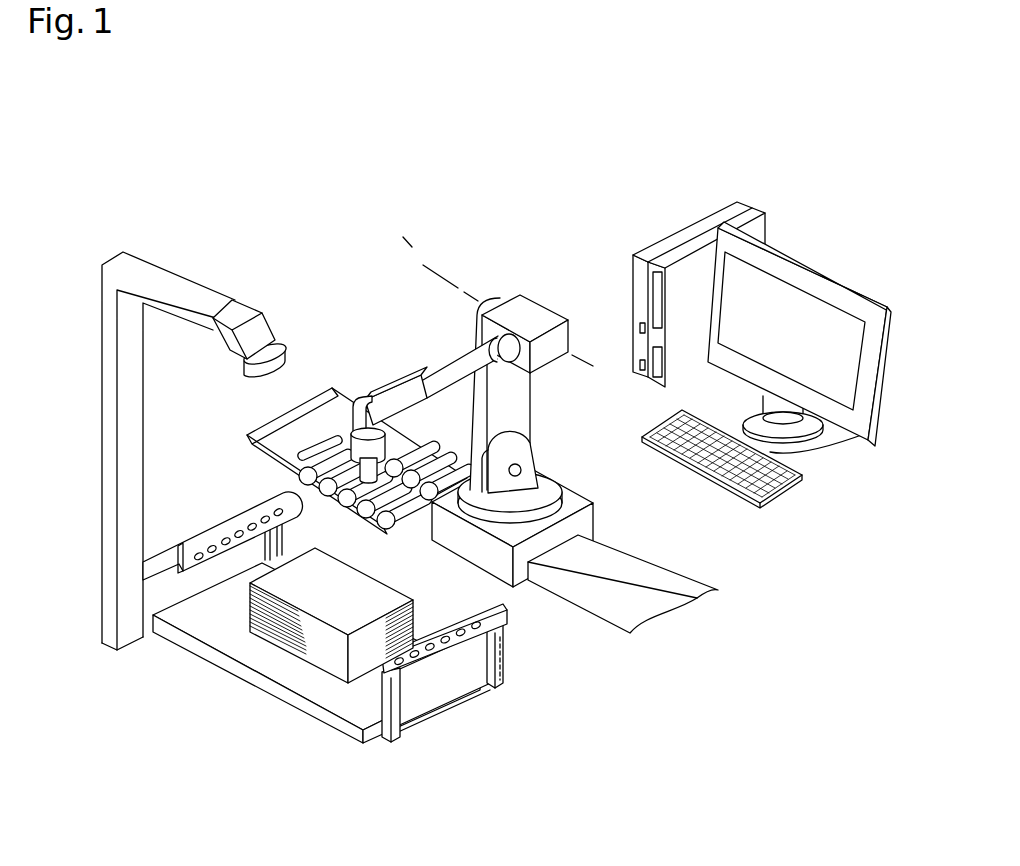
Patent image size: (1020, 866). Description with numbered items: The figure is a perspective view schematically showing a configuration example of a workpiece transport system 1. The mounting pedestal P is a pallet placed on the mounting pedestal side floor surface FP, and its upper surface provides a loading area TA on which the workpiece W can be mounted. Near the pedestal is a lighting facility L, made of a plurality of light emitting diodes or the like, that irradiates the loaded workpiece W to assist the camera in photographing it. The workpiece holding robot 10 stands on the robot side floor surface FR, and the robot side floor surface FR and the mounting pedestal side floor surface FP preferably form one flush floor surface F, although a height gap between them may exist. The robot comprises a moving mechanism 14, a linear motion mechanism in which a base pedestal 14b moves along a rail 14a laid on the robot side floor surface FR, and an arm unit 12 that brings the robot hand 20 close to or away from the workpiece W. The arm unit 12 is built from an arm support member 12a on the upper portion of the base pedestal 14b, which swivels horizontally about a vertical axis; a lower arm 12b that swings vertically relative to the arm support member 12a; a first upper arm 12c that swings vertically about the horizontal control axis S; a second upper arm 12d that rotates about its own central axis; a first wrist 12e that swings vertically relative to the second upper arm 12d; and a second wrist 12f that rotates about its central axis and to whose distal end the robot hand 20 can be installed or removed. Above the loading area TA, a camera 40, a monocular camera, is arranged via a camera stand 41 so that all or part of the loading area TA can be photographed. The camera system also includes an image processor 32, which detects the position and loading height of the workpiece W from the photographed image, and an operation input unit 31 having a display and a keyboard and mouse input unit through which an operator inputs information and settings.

The workpiece transport system 1 is at (666, 111).
The workpiece holding robot 10 is at (467, 416).
The arm unit 12 is at (406, 361).
The arm support member 12a is at (525, 458).
The lower arm 12b is at (518, 403).
The first upper arm 12c is at (535, 312).
The second upper arm 12d is at (447, 370).
The first wrist 12e is at (354, 416).
The second wrist 12f is at (302, 456).
The moving mechanism 14 is at (575, 545).
The rail 14a is at (600, 563).
The base pedestal 14b is at (578, 522).
The robot hand 20 is at (419, 469).
The operation input unit 31 is at (877, 273).
The image processor 32 is at (666, 213).
The camera 40 is at (287, 341).
The camera stand 41 is at (102, 468).
The lighting facility L is at (303, 510).
The workpiece W is at (353, 583).
The mounting pedestal P is at (316, 679).
The loading area TA is at (357, 703).
The control axis S is at (492, 287).
The floor surface F is at (580, 680).
The robot side floor surface FR is at (572, 613).
The mounting pedestal side floor surface FP is at (480, 708).